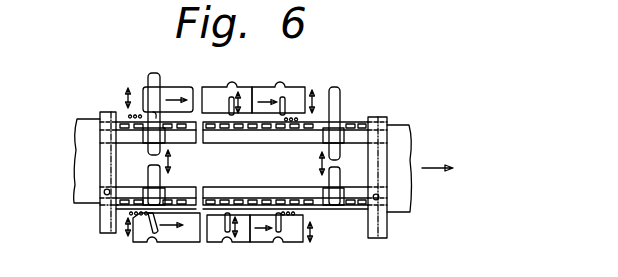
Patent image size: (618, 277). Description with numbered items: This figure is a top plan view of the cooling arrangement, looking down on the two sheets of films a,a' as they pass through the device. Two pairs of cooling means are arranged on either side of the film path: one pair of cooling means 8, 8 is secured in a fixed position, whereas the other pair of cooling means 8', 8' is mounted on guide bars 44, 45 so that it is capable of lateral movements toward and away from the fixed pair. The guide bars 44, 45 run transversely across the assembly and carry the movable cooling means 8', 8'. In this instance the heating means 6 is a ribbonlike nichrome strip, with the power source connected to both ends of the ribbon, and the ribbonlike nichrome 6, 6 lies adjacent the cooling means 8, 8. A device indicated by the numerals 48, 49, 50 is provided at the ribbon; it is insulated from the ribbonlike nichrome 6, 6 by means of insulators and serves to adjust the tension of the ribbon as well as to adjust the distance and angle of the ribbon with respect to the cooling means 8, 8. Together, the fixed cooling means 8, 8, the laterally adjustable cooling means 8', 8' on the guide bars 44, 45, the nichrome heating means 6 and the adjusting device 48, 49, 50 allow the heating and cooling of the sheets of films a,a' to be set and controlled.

The heating means 6 is at (250, 88).
The cooling means 8 is at (243, 179).
The cooling means 8' is at (243, 150).
The guide bar 44 is at (147, 78).
The guide bar 45 is at (343, 98).
The tension adjusting device 48 is at (138, 246).
The tension adjusting device 49 is at (212, 245).
The tension adjusting device 50 is at (295, 244).
The sheets of films a,a' is at (221, 161).